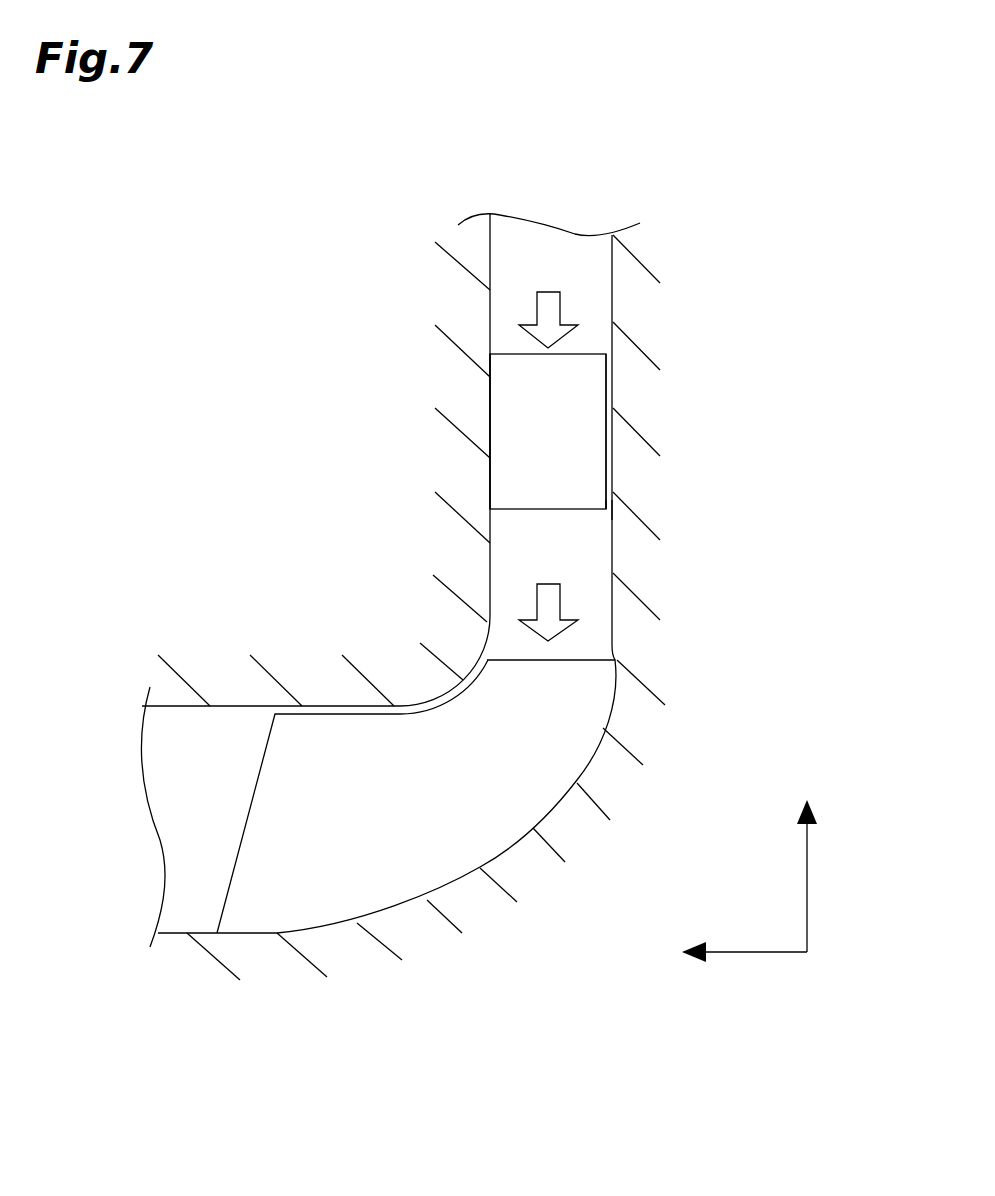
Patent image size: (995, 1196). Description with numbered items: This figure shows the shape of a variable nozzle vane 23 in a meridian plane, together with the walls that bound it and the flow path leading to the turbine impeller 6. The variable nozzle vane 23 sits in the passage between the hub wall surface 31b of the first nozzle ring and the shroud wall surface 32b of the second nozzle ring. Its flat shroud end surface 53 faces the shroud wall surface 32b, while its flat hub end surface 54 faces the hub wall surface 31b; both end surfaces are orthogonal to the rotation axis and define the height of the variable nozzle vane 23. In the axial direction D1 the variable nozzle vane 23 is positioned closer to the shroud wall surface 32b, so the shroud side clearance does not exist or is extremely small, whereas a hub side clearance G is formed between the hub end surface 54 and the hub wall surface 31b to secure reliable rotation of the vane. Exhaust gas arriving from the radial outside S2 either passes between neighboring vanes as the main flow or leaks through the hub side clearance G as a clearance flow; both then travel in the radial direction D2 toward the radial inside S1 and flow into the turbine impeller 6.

The turbine impeller 6 is at (196, 827).
The variable nozzle vane 23 is at (594, 338).
The hub wall surface 31b is at (600, 375).
The shroud wall surface 32b is at (492, 422).
The shroud end surface 53 is at (486, 464).
The hub end surface 54 is at (616, 465).
The hub side clearance G is at (605, 516).
The radial inside S1 is at (537, 570).
The radial outside S2 is at (537, 277).
The axial direction D1 is at (757, 954).
The radial direction D2 is at (810, 886).